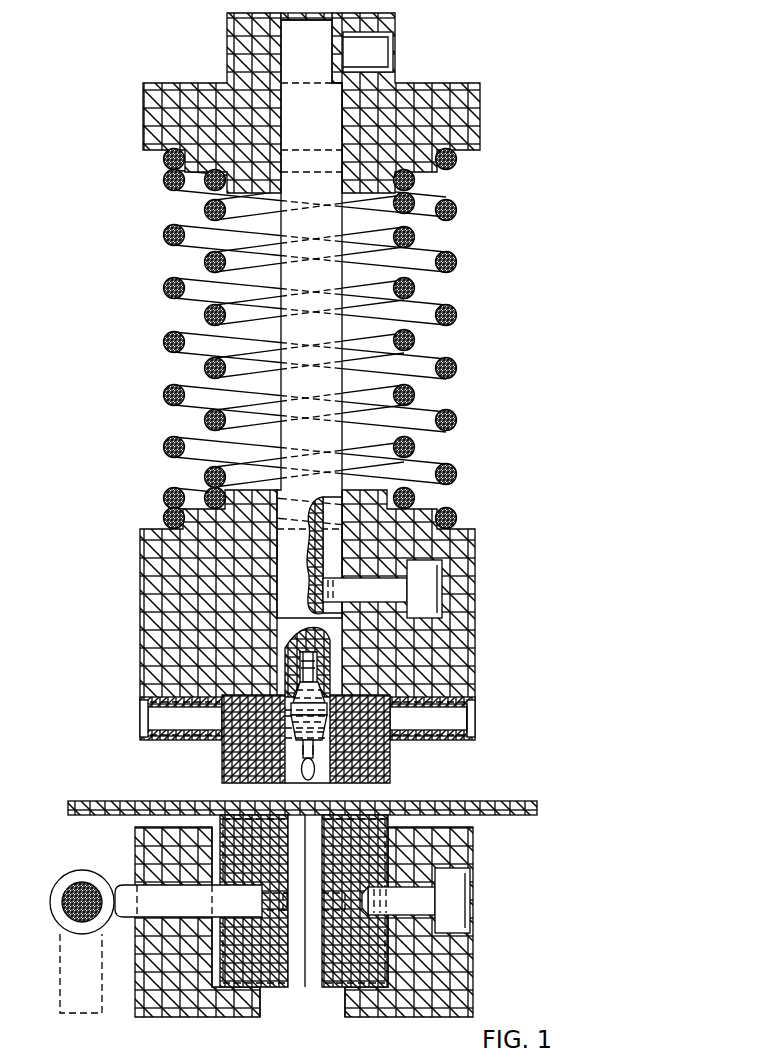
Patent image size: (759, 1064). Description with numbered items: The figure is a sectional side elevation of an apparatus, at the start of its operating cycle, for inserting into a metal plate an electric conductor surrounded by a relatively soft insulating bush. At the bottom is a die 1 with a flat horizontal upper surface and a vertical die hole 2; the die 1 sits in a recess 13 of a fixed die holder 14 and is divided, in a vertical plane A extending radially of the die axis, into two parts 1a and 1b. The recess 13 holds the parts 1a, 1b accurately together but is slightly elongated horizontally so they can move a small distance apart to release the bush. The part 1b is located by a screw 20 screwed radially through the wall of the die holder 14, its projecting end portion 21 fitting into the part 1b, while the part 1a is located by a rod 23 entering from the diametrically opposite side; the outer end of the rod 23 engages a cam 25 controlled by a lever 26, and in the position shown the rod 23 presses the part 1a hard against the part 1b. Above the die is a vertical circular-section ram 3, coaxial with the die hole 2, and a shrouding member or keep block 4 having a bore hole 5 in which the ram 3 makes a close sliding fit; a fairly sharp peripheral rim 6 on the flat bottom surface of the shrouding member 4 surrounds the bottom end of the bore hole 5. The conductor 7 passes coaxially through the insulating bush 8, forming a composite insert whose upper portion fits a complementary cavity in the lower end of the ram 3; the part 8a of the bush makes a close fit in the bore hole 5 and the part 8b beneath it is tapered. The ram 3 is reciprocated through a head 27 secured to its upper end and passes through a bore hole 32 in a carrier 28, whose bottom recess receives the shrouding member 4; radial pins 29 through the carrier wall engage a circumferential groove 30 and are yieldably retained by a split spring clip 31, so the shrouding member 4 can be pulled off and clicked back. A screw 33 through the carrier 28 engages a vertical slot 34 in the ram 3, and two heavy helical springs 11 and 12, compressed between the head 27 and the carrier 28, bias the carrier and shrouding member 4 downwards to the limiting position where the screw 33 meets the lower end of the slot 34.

The die 1 is at (383, 848).
The die part 1a is at (261, 975).
The die part 1b is at (332, 975).
The die hole 2 is at (313, 875).
The ram 3 is at (338, 327).
The shrouding member 4 is at (221, 746).
The bore hole 5 is at (297, 753).
The peripheral rim 6 is at (330, 783).
The conductor 7 is at (303, 752).
The insulating bush 8 is at (312, 686).
The bush part 8a is at (327, 698).
The tapered bush part 8b is at (327, 727).
The helical spring 11 is at (415, 237).
The helical spring 12 is at (456, 260).
The recess 13 is at (208, 848).
The die holder 14 is at (458, 982).
The screw 20 is at (425, 902).
The projecting end portion 21 is at (385, 910).
The rod 23 is at (148, 910).
The cam 25 is at (58, 878).
The lever 26 is at (75, 958).
The head 27 is at (447, 90).
The carrier 28 is at (152, 620).
The radial pins 29 is at (168, 717).
The circumferential groove 30 is at (145, 688).
The split spring clip 31 is at (470, 725).
The bore hole 32 is at (273, 553).
The screw 33 is at (395, 590).
The vertical slot 34 is at (332, 540).
The vertical plane A is at (289, 1005).